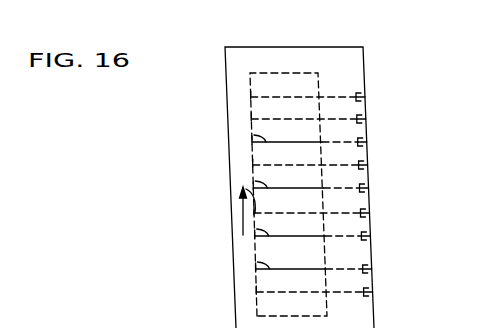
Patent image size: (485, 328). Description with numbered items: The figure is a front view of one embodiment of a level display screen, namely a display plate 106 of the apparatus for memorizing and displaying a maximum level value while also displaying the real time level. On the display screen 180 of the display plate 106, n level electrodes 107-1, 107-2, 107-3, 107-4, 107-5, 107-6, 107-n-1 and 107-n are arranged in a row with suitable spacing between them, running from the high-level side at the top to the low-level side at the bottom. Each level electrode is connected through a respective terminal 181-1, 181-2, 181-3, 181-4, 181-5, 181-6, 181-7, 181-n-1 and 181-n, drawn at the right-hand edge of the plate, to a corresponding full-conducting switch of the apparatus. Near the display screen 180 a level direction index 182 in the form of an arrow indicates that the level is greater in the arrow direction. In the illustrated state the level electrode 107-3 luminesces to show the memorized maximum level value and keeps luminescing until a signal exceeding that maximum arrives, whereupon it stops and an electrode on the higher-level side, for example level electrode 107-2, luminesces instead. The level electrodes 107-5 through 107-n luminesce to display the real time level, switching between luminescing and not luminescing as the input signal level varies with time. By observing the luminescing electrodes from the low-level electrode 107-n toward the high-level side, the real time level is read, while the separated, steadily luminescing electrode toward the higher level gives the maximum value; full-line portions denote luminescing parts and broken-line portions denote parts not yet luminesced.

The display plate 106 is at (312, 47).
The display screen 180 is at (265, 73).
The level direction index 182 is at (226, 224).
The level electrode 107-1 is at (251, 97).
The level electrode 107-2 is at (251, 119).
The level electrode 107-3 is at (252, 142).
The level electrode 107-4 is at (253, 165).
The level electrode 107-5 is at (253, 188).
The level electrode 107-6 is at (254, 213).
The level electrode 107-n-1 is at (256, 269).
The level electrode 107-n is at (256, 292).
The terminal 181-1 is at (367, 74).
The terminal 181-2 is at (368, 108).
The terminal 181-3 is at (368, 140).
The terminal 181-4 is at (369, 163).
The terminal 181-5 is at (370, 186).
The terminal 181-6 is at (370, 211).
The terminal 181-7 is at (371, 234).
The terminal 181-n-1 is at (372, 261).
The terminal 181-n is at (373, 286).